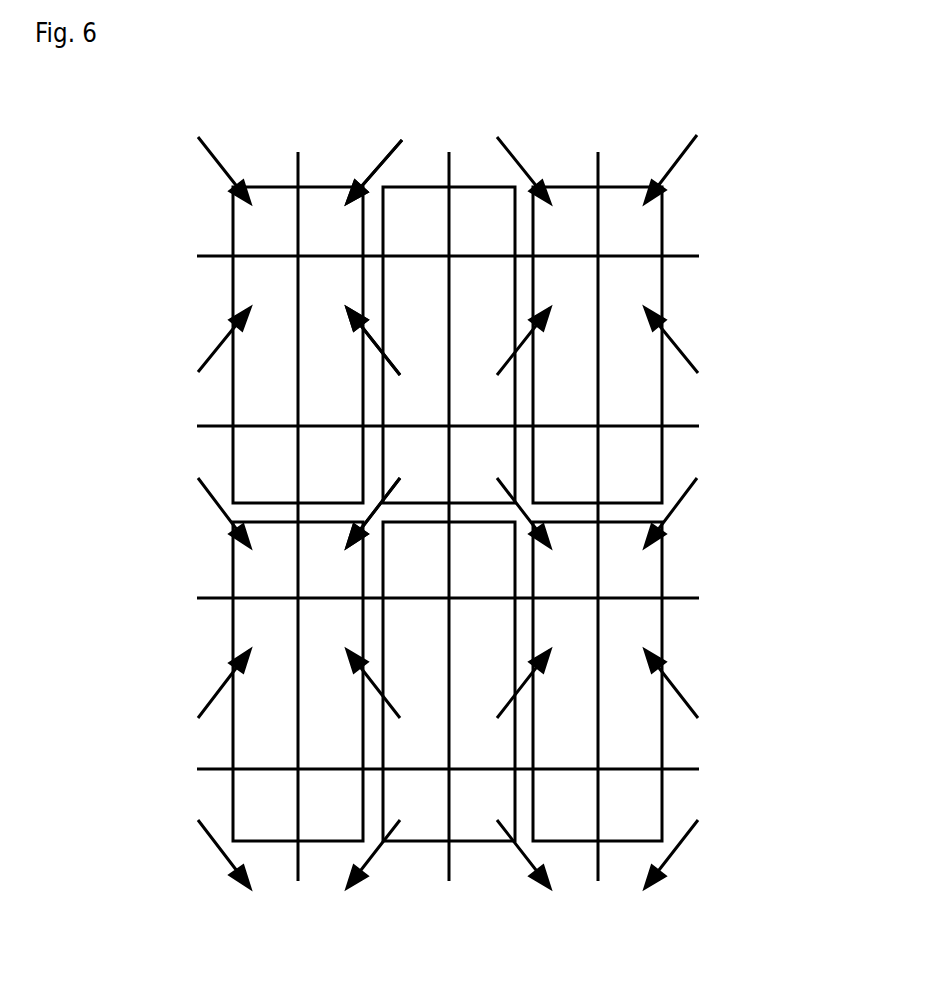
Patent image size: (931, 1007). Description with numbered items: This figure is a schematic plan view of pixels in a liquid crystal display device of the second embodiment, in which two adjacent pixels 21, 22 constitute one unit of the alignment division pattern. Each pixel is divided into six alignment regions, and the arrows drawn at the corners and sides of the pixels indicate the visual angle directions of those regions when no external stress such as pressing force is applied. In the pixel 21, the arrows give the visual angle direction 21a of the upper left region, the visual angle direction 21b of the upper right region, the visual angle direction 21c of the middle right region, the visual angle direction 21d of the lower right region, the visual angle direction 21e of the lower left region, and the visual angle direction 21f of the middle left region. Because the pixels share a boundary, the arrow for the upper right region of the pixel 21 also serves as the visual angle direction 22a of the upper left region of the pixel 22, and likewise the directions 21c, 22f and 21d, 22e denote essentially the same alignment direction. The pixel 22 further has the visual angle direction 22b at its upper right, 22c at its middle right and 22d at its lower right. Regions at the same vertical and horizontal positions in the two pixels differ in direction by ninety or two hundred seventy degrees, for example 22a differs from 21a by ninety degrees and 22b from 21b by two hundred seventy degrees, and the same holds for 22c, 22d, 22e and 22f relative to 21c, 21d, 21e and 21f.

The pixel 21 is at (233, 282).
The pixel 22 is at (473, 186).
The visual angle direction 21a is at (222, 168).
The visual angle direction 21b is at (382, 158).
The visual angle direction 21c is at (380, 347).
The visual angle direction 21d is at (381, 503).
The visual angle direction 21e is at (213, 503).
The visual angle direction 21f is at (212, 352).
The visual angle direction 22a is at (374, 143).
The visual angle direction 22b is at (510, 152).
The visual angle direction 22c is at (517, 347).
The visual angle direction 22d is at (500, 482).
The visual angle direction 22e is at (247, 491).
The visual angle direction 22f is at (248, 365).